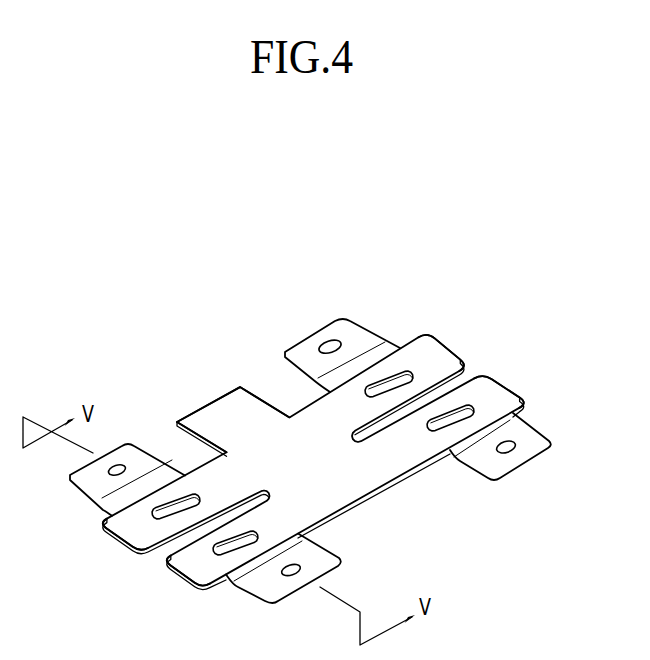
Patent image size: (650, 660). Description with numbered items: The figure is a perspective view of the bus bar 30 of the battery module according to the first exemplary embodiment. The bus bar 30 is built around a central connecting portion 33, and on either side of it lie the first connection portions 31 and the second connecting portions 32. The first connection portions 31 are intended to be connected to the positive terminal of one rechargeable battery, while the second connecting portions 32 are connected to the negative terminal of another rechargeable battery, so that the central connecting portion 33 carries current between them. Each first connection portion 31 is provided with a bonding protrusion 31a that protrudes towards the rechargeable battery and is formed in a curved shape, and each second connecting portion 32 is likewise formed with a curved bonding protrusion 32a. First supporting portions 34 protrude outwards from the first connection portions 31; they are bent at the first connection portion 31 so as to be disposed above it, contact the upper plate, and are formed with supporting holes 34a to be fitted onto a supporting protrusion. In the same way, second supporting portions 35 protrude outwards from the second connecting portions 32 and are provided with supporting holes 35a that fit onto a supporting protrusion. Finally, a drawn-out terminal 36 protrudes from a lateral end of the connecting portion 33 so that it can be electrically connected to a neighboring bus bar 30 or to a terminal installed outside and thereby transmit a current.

The bus bar 30 is at (240, 333).
The first connection portion 31 is at (483, 386).
The bonding protrusion 31a is at (408, 371).
The second connection portion 32 is at (178, 560).
The bonding protrusion 32a is at (172, 503).
The central connecting portion 33 is at (343, 470).
The first supporting portion 34 is at (357, 333).
The supporting hole 34a is at (320, 344).
The second supporting portion 35 is at (90, 485).
The supporting hole 35a is at (117, 465).
The drawn-out terminal 36 is at (225, 405).